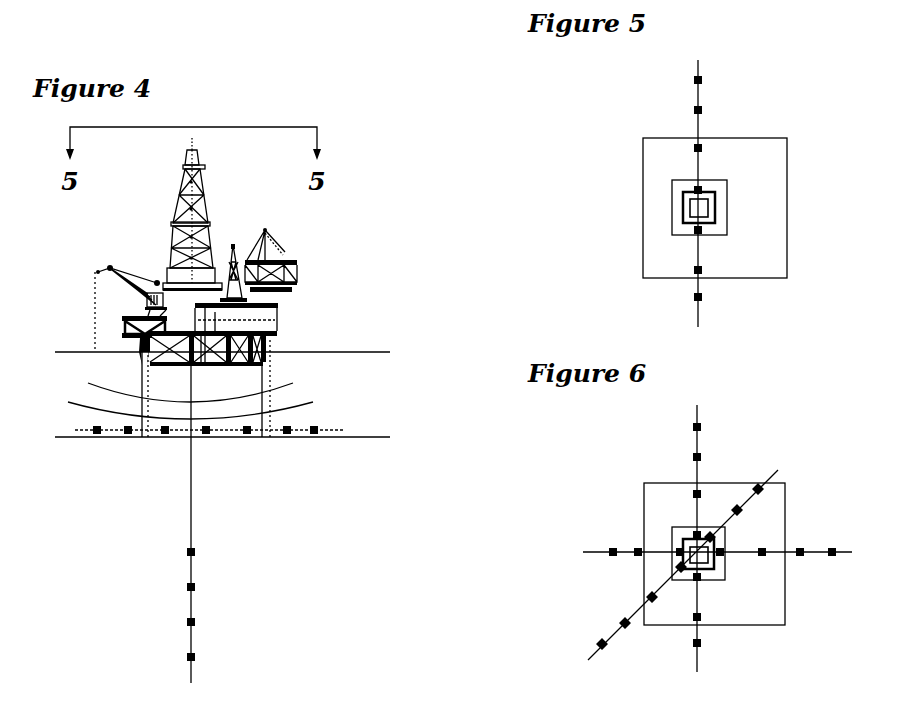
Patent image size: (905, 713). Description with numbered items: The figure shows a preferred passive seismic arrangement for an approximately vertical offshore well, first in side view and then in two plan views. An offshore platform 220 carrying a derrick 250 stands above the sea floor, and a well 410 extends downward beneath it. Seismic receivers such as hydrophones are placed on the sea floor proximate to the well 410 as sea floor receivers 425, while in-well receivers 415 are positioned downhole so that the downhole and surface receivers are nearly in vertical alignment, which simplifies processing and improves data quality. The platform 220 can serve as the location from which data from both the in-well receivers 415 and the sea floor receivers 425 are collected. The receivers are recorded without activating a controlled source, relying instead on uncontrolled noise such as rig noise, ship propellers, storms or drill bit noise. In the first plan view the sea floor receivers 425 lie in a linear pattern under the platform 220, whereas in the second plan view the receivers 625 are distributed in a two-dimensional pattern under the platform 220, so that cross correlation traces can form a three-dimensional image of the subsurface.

In FIG. 4, the platform 220 is at (318, 256).
In FIG. 5, the platform 220 is at (655, 127).
In FIG. 6, the platform 220 is at (655, 472).
In FIG. 4, the derrick 250 is at (202, 193).
In FIG. 5, the derrick 250 is at (672, 183).
In FIG. 6, the derrick 250 is at (672, 528).
In FIG. 4, the well 410 is at (191, 507).
In FIG. 4, the in-well receivers 415 is at (195, 585).
In FIG. 4, the sea floor receivers 425 is at (247, 437).
In FIG. 5, the sea floor receivers 425 is at (704, 148).
In FIG. 6, the surface receivers 625 is at (703, 494).